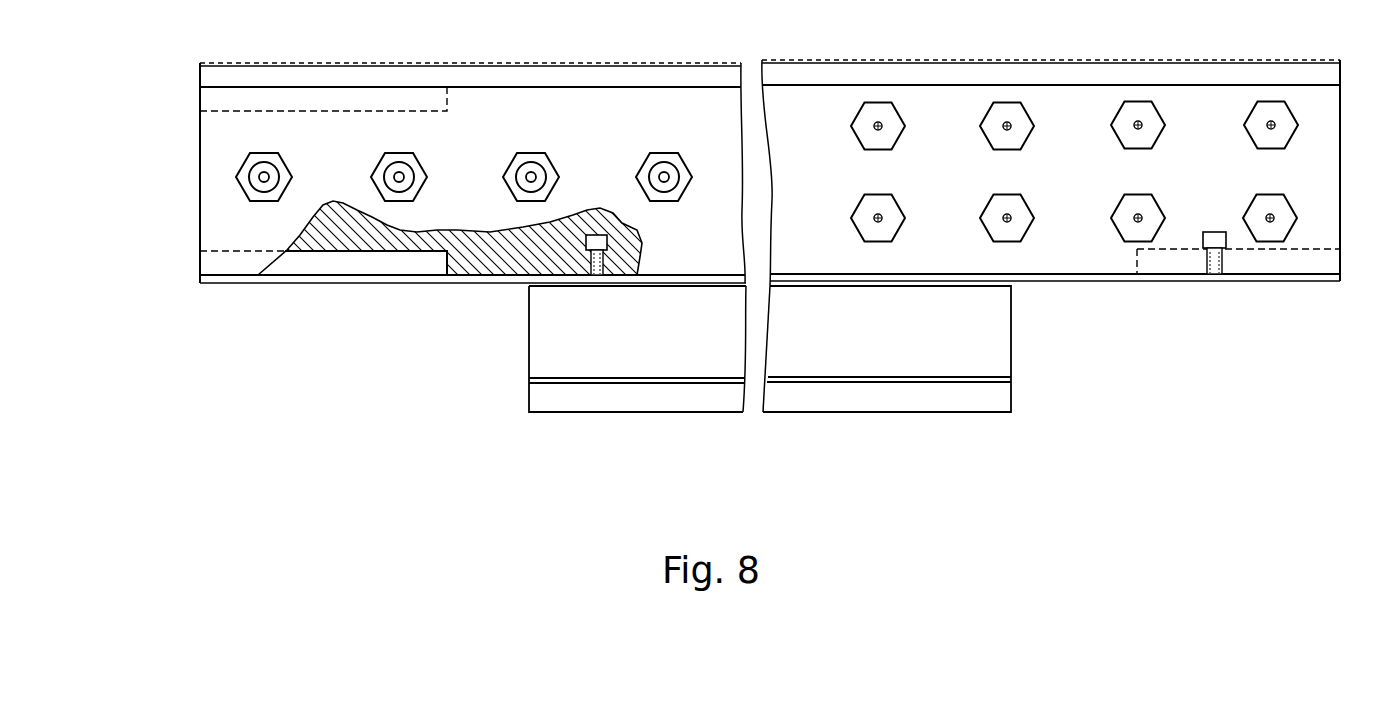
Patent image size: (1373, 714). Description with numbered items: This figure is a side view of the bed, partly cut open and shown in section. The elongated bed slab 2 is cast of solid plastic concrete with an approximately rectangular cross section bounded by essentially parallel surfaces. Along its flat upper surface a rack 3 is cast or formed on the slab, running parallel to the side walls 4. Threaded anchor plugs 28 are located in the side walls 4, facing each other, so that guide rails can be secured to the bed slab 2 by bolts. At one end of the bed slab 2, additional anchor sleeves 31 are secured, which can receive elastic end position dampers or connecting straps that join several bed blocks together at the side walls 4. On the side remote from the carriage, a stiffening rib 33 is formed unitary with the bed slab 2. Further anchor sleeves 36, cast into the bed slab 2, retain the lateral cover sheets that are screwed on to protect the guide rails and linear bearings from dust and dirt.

The bed slab 2 is at (196, 239).
The rack 3 is at (1043, 75).
The side walls 4 is at (1319, 107).
The threaded anchor plugs 28 is at (257, 194).
The anchor sleeves 31 is at (1270, 232).
The stiffening rib 33 is at (547, 400).
The anchor sleeves 36 is at (583, 253).